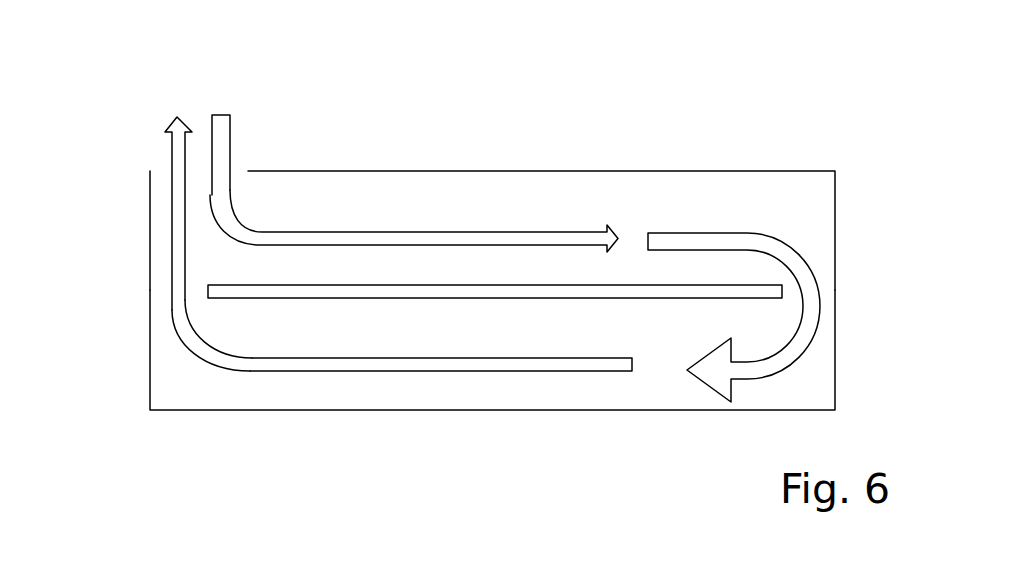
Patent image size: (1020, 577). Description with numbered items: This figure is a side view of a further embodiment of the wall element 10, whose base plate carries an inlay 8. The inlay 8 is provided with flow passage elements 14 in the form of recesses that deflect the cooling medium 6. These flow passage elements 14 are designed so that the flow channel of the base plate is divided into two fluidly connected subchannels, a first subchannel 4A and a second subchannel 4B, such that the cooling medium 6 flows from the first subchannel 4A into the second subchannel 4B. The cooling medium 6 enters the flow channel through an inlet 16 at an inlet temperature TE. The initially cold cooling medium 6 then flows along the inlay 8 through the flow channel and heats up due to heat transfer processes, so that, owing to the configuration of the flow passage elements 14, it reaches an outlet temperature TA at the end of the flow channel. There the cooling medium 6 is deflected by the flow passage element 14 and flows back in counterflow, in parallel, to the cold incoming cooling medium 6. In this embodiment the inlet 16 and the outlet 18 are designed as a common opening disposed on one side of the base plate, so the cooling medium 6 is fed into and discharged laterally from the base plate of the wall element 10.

The first subchannel 4A is at (718, 207).
The second subchannel 4B is at (672, 363).
The cooling medium 6 is at (472, 235).
The inlay 8 is at (633, 293).
The wall element 10 is at (492, 268).
The flow passage element 14 is at (152, 322).
The inlet 16 is at (235, 172).
The outlet 18 is at (172, 155).
The outlet temperature TA is at (176, 118).
The inlet temperature TE is at (218, 128).